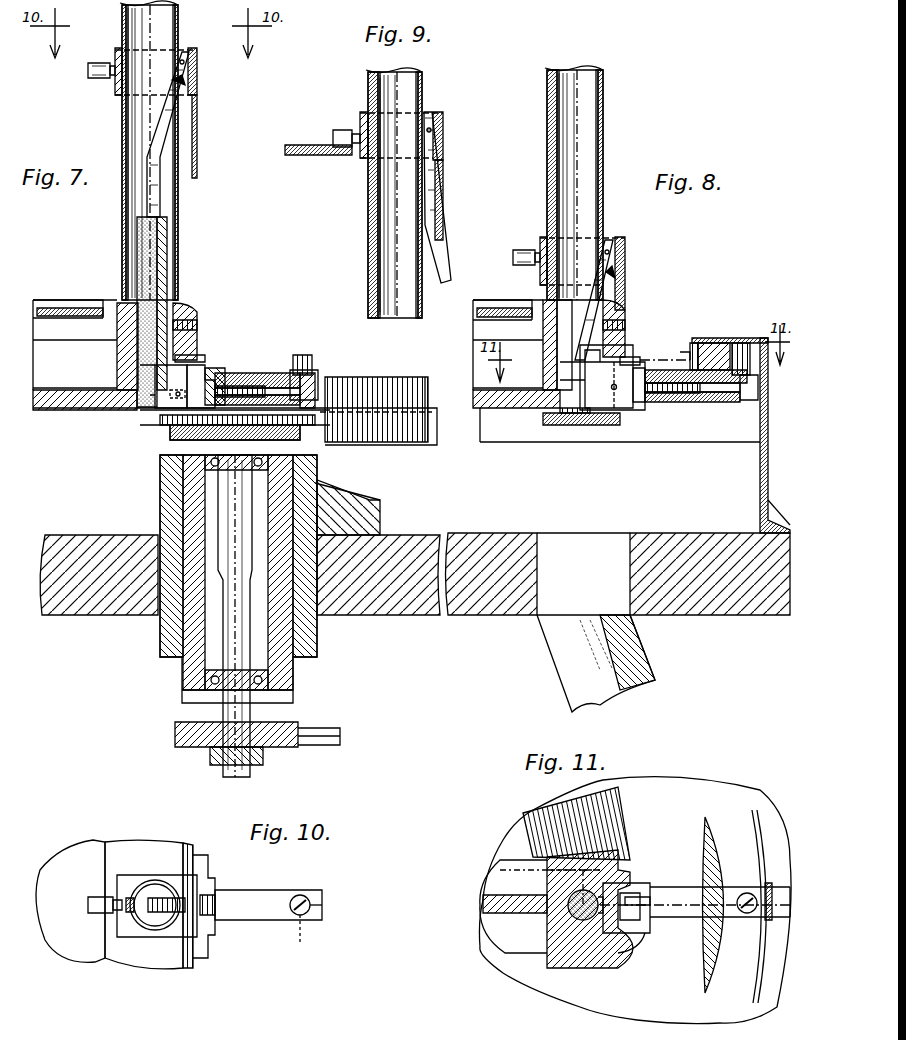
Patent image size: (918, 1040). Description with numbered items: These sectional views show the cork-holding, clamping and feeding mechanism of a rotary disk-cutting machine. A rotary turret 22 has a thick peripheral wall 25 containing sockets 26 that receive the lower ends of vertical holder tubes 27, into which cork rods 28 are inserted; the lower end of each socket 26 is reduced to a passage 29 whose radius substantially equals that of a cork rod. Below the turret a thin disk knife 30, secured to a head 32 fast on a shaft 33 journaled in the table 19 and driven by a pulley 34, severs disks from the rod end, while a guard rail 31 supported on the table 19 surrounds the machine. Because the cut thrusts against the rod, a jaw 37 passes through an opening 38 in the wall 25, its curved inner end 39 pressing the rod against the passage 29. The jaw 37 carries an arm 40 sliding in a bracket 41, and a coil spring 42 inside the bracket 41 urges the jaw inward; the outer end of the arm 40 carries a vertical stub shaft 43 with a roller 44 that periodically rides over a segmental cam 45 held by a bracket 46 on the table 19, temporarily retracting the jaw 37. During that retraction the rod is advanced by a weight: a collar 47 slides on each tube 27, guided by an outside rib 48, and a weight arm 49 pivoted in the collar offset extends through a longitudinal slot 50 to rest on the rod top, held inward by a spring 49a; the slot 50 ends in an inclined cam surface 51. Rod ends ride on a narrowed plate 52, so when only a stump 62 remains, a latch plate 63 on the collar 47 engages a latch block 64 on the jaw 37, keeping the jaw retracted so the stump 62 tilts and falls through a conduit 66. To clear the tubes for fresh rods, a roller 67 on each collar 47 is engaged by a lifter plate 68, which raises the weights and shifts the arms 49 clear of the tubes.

In FIG. 7, the table 19 is at (410, 600).
In FIG. 8, the table 19 is at (495, 600).
In FIG. 11, the table 19 is at (712, 778).
In FIG. 7, the rotary turret 22 is at (38, 410).
In FIG. 8, the rotary turret 22 is at (512, 410).
In FIG. 11, the rotary turret 22 is at (490, 930).
In FIG. 7, the peripheral wall 25 is at (195, 305).
In FIG. 8, the peripheral wall 25 is at (626, 310).
In FIG. 10, the peripheral wall 25 is at (185, 843).
In FIG. 11, the peripheral wall 25 is at (580, 955).
In FIG. 7, the socket 26 is at (117, 330).
In FIG. 8, the socket 26 is at (548, 340).
In FIG. 7, the holder tube 27 is at (130, 212).
In FIG. 9, the holder tube 27 is at (425, 88).
In FIG. 8, the holder tube 27 is at (547, 123).
In FIG. 10, the holder tube 27 is at (135, 915).
In FIG. 7, the cork rod 28 is at (160, 256).
In FIG. 7, the passage 29 is at (155, 378).
In FIG. 8, the passage 29 is at (572, 380).
In FIG. 11, the passage 29 is at (548, 928).
In FIG. 7, the knife 30 is at (360, 395).
In FIG. 7, the guard rail 31 is at (438, 440).
In FIG. 8, the guard rail 31 is at (728, 445).
In FIG. 11, the guard rail 31 is at (750, 998).
In FIG. 7, the head 32 is at (300, 425).
In FIG. 7, the shaft 33 is at (245, 660).
In FIG. 7, the pulley 34 is at (285, 750).
In FIG. 7, the jaw 37 is at (160, 400).
In FIG. 8, the jaw 37 is at (612, 410).
In FIG. 11, the jaw 37 is at (625, 883).
In FIG. 7, the opening 38 is at (200, 360).
In FIG. 11, the inner end 39 is at (630, 952).
In FIG. 7, the arm 40 is at (262, 386).
In FIG. 8, the arm 40 is at (690, 392).
In FIG. 7, the bracket 41 is at (240, 373).
In FIG. 8, the bracket 41 is at (665, 402).
In FIG. 10, the bracket 41 is at (262, 890).
In FIG. 11, the bracket 41 is at (675, 887).
In FIG. 7, the coil spring 42 is at (215, 368).
In FIG. 8, the coil spring 42 is at (640, 408).
In FIG. 7, the stub shaft 43 is at (312, 373).
In FIG. 10, the stub shaft 43 is at (301, 939).
In FIG. 7, the roller 44 is at (312, 358).
In FIG. 8, the roller 44 is at (752, 372).
In FIG. 10, the roller 44 is at (312, 900).
In FIG. 11, the roller 44 is at (752, 896).
In FIG. 8, the segmental cam 45 is at (712, 343).
In FIG. 11, the segmental cam 45 is at (712, 945).
In FIG. 8, the bracket 46 is at (730, 338).
In FIG. 7, the collar 47 is at (116, 92).
In FIG. 9, the collar 47 is at (360, 112).
In FIG. 8, the collar 47 is at (540, 237).
In FIG. 10, the collar 47 is at (130, 915).
In FIG. 7, the outside rib 48 is at (122, 245).
In FIG. 9, the outside rib 48 is at (368, 257).
In FIG. 8, the outside rib 48 is at (547, 87).
In FIG. 10, the outside rib 48 is at (130, 875).
In FIG. 7, the weight arm 49 is at (150, 150).
In FIG. 9, the weight arm 49 is at (448, 275).
In FIG. 8, the weight arm 49 is at (582, 305).
In FIG. 10, the weight arm 49 is at (155, 898).
In FIG. 11, the weight arm 49 is at (560, 905).
In FIG. 7, the spring 49a is at (182, 95).
In FIG. 7, the longitudinal slot 50 is at (178, 200).
In FIG. 9, the longitudinal slot 50 is at (422, 305).
In FIG. 8, the longitudinal slot 50 is at (603, 117).
In FIG. 10, the longitudinal slot 50 is at (172, 925).
In FIG. 9, the inclined cam surface 51 is at (418, 230).
In FIG. 7, the plate 52 is at (120, 425).
In FIG. 8, the plate 52 is at (590, 412).
In FIG. 8, the stump 62 is at (566, 425).
In FIG. 11, the stump 62 is at (568, 900).
In FIG. 7, the latch plate 63 is at (197, 158).
In FIG. 9, the latch plate 63 is at (443, 220).
In FIG. 8, the latch plate 63 is at (628, 292).
In FIG. 10, the latch plate 63 is at (205, 945).
In FIG. 11, the latch plate 63 is at (645, 933).
In FIG. 8, the latch block 64 is at (640, 362).
In FIG. 11, the latch block 64 is at (655, 915).
In FIG. 8, the conduit 66 is at (645, 655).
In FIG. 11, the conduit 66 is at (600, 808).
In FIG. 7, the roller 67 is at (98, 63).
In FIG. 9, the roller 67 is at (342, 130).
In FIG. 8, the roller 67 is at (522, 250).
In FIG. 10, the roller 67 is at (92, 913).
In FIG. 7, the lifter plate 68 is at (70, 308).
In FIG. 9, the lifter plate 68 is at (322, 157).
In FIG. 8, the lifter plate 68 is at (490, 308).
In FIG. 10, the lifter plate 68 is at (72, 850).